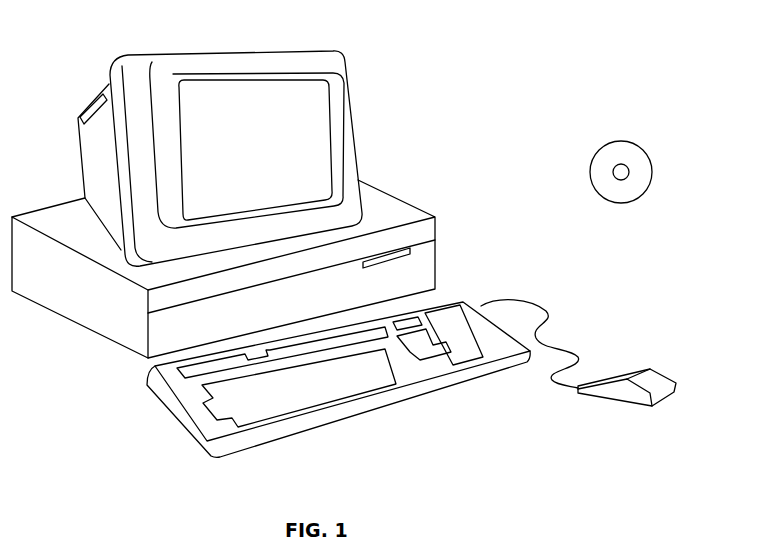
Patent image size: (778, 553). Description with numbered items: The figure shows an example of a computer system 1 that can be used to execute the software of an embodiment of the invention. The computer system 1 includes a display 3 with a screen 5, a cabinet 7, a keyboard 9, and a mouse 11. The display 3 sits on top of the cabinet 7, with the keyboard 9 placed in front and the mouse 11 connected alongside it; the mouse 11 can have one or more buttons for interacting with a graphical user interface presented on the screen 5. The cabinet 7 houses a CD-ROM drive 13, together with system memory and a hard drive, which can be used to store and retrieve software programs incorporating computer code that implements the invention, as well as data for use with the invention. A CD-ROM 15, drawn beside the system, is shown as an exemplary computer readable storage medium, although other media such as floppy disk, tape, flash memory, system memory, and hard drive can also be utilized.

The computer system 1 is at (546, 27).
The display 3 is at (357, 156).
The screen 5 is at (331, 107).
The cabinet 7 is at (108, 339).
The keyboard 9 is at (348, 414).
The mouse 11 is at (669, 378).
The CD-ROM drive 13 is at (414, 244).
The CD-ROM 15 is at (636, 145).